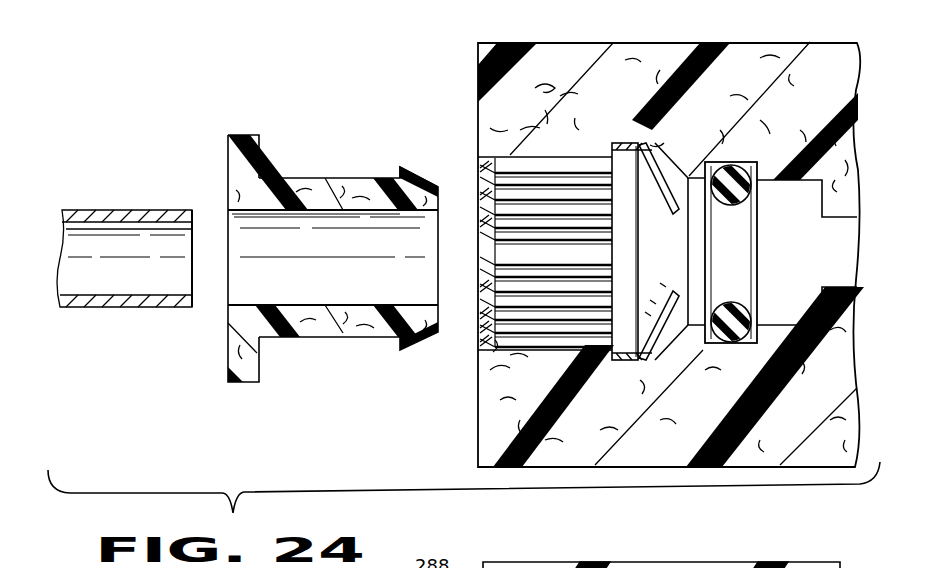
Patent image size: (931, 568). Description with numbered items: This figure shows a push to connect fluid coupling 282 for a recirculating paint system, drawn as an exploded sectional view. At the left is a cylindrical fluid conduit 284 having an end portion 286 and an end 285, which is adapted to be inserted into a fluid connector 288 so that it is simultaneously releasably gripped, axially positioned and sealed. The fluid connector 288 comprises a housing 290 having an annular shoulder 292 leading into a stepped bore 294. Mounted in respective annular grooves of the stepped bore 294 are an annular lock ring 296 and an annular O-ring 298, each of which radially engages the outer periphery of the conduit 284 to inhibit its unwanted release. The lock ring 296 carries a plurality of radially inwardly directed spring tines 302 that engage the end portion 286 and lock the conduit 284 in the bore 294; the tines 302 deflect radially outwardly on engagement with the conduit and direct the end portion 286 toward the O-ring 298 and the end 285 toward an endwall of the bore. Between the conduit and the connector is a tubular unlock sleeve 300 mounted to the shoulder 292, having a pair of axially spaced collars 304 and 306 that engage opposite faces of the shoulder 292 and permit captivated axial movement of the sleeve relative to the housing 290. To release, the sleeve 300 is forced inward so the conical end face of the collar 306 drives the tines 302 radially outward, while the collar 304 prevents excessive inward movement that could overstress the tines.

The push to connect fluid coupling 282 is at (276, 256).
The cylindrical fluid conduit 284 is at (83, 206).
The end 285 is at (191, 212).
The end portion 286 is at (112, 212).
The fluid connector 288 is at (629, 240).
The housing 290 is at (478, 80).
The annular shoulder 292 is at (497, 112).
The stepped bore 294 is at (530, 322).
The annular lock ring 296 is at (620, 142).
The annular O-ring 298 is at (742, 162).
The tubular unlock sleeve 300 is at (241, 128).
The spring tines 302 is at (673, 152).
The collar 304 is at (255, 148).
The collar 306 is at (405, 166).